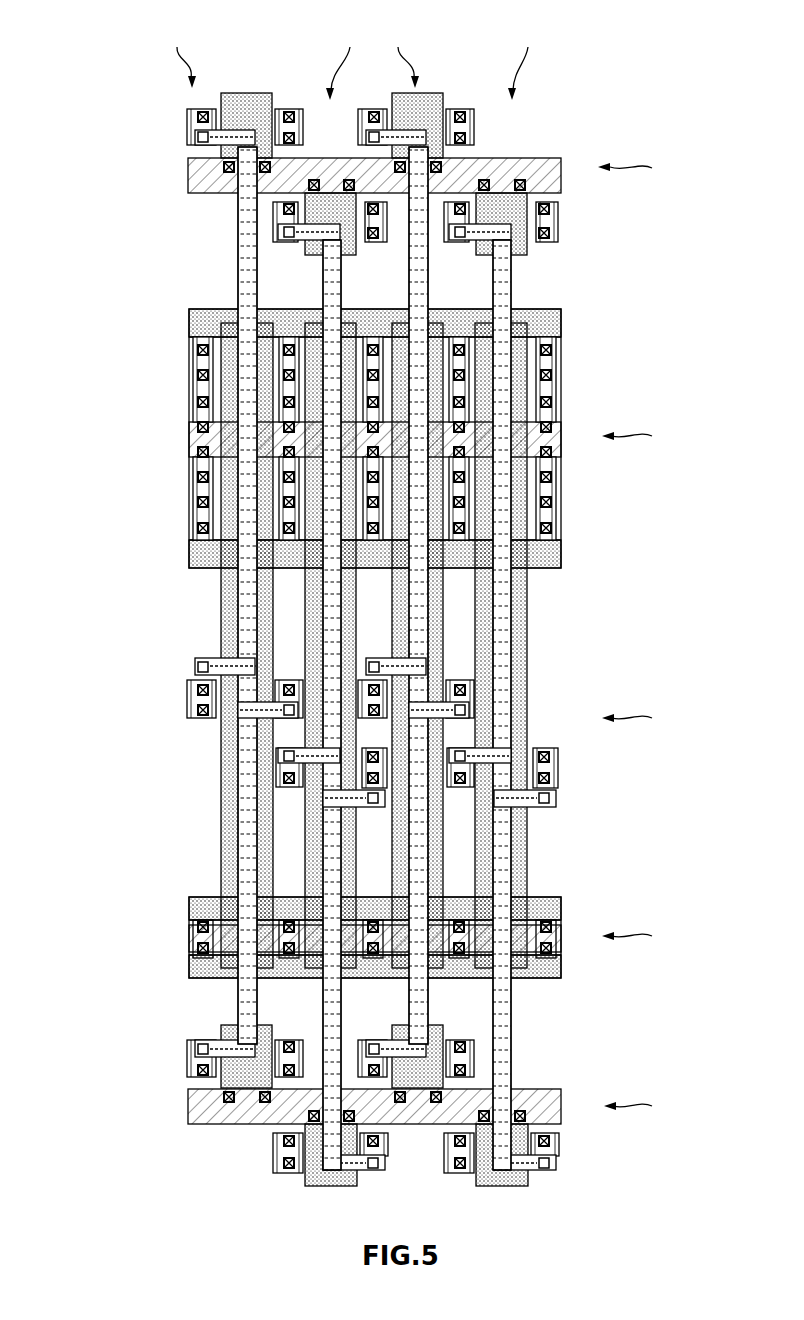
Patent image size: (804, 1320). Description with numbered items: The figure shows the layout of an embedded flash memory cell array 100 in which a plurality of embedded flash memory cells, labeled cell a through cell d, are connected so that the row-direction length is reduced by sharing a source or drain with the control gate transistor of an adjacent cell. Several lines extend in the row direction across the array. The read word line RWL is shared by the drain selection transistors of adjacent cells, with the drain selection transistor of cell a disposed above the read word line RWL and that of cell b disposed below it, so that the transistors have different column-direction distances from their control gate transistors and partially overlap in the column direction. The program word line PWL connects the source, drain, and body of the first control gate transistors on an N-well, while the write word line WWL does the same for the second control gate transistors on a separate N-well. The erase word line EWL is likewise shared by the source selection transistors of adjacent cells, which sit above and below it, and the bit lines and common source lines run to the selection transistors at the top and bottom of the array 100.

The embedded flash memory cell array 100 is at (63, 8).
The read word line RWL is at (196, 178).
The program word line PWL is at (197, 439).
The write word line WWL is at (196, 937).
The erase word line EWL is at (198, 1108).